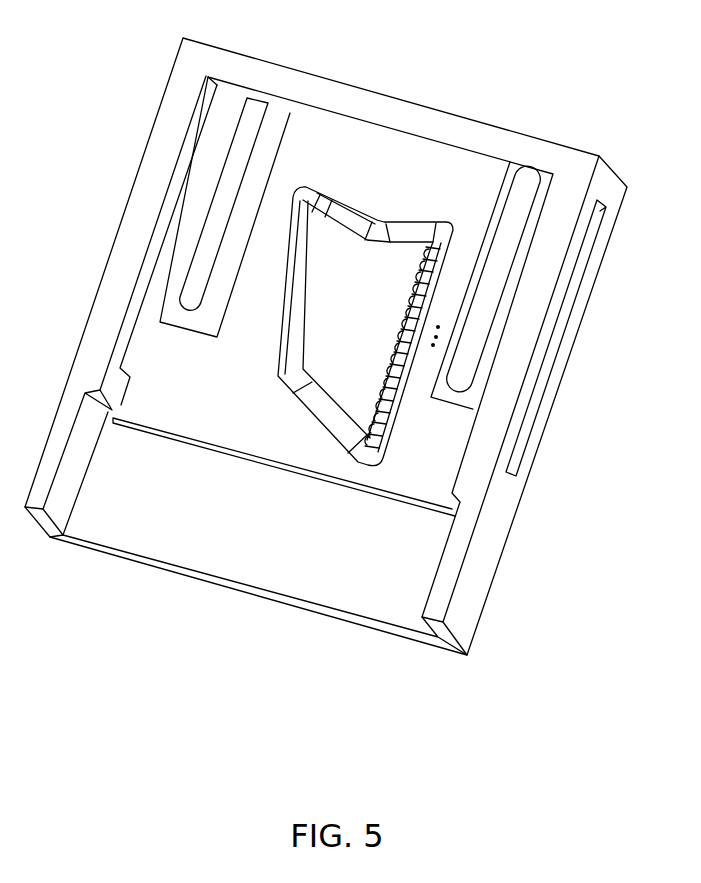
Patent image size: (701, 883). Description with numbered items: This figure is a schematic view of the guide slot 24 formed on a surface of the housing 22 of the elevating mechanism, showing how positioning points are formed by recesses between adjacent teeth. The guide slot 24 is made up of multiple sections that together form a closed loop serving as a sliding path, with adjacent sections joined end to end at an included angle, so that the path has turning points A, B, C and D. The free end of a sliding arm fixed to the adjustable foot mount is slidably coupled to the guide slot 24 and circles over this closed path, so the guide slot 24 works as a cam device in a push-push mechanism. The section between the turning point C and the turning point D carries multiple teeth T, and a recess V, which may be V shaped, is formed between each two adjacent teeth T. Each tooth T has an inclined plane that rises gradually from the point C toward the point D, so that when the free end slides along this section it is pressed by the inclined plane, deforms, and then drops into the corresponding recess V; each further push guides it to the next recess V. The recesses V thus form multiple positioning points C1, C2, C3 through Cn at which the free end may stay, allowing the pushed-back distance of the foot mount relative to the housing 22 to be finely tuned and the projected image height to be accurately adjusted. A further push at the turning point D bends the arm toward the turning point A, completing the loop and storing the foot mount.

The housing 22 is at (138, 172).
The guide slot 24 is at (415, 233).
The turning point A is at (380, 203).
The turning point B is at (309, 173).
The turning point C is at (374, 478).
The turning point D is at (447, 203).
The positioning point C1 is at (397, 448).
The positioning point C2 is at (404, 423).
The positioning point C3 is at (412, 396).
The positioning point Cn is at (454, 274).
The recess V is at (428, 298).
The tooth T is at (427, 316).